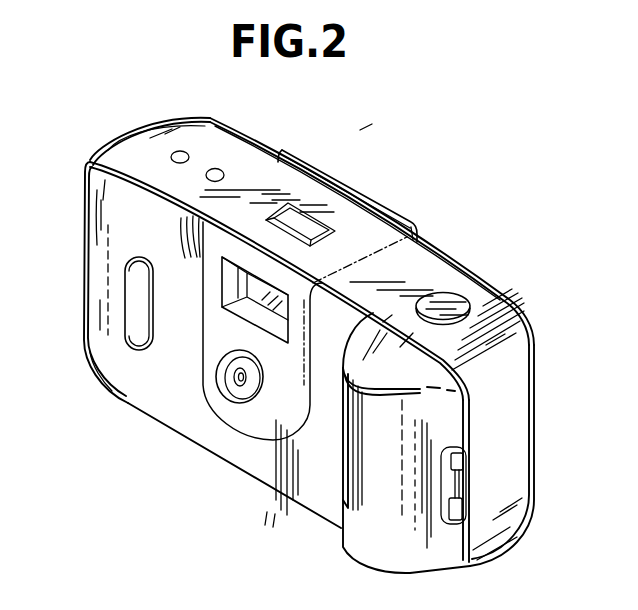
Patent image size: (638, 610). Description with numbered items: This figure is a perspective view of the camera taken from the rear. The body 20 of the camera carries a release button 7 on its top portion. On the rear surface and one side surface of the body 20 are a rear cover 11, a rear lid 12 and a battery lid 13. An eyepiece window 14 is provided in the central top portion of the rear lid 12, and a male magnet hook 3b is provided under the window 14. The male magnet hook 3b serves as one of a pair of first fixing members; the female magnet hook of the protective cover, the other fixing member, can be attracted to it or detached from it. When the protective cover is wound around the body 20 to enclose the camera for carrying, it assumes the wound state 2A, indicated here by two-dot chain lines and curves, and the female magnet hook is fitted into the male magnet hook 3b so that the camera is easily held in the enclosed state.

The body 20 is at (123, 147).
The wound state 2A is at (210, 217).
The release button 7 is at (460, 293).
The battery lid 13 is at (518, 415).
The rear lid 12 is at (123, 373).
The eyepiece window 14 is at (218, 364).
The male magnet hook 3b is at (221, 384).
The rear cover 11 is at (352, 544).